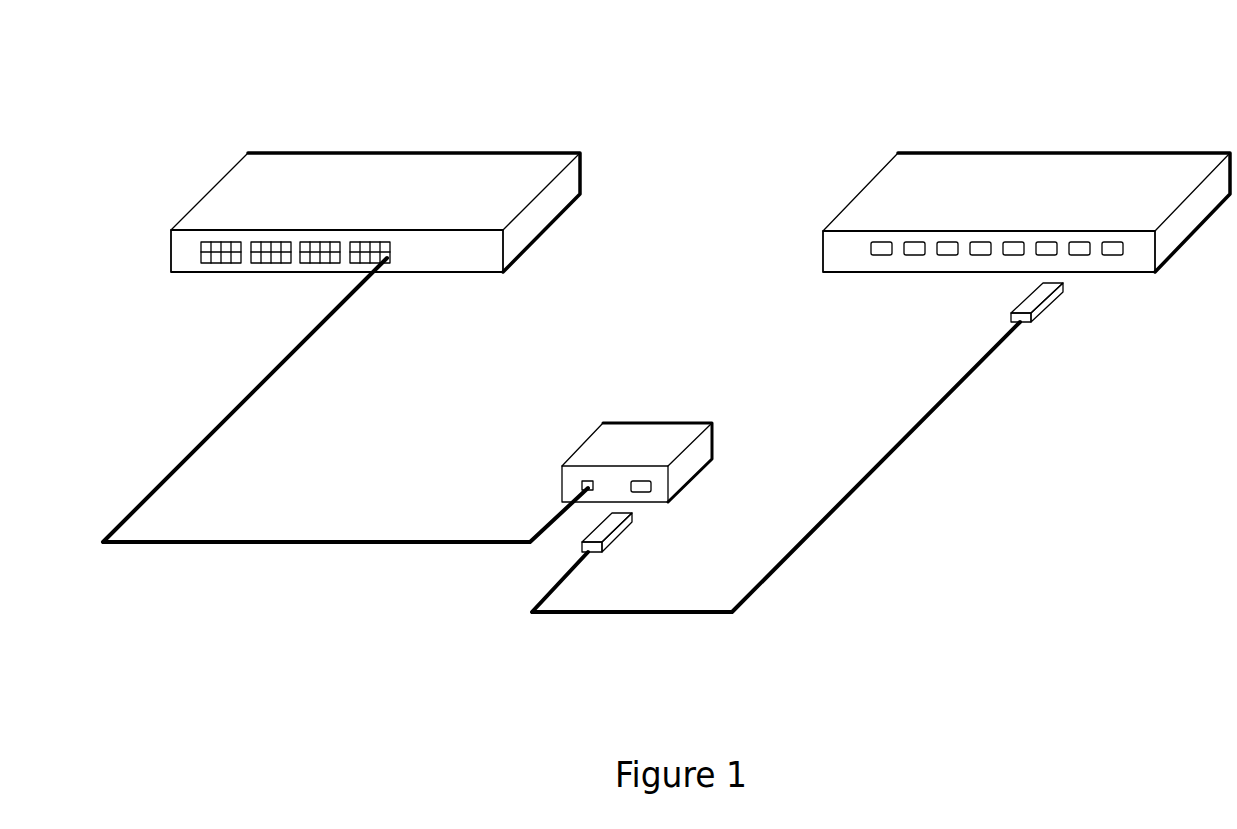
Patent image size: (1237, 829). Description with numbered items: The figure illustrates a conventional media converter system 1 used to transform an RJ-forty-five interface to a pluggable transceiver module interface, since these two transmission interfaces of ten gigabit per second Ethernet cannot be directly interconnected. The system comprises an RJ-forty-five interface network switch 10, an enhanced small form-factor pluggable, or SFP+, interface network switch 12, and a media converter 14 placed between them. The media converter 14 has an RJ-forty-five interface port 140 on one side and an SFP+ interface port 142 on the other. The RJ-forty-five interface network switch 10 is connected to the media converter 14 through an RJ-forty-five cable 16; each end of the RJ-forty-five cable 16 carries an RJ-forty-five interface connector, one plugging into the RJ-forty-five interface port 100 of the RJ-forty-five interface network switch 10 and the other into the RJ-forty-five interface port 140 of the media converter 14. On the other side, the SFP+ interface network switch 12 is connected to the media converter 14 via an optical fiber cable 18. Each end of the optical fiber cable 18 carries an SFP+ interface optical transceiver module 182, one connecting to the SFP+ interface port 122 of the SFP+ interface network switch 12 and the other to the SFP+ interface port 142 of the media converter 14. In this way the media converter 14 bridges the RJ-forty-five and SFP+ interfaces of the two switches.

The media converter system 1 is at (196, 45).
The RJ-45 interface network switch 10 is at (375, 206).
The RJ-45 interface port 100 is at (387, 258).
The SFP+ interface network switch 12 is at (1026, 199).
The SFP+ interface port 122 is at (1083, 255).
The media converter 14 is at (616, 424).
The RJ-45 interface port 140 is at (585, 480).
The SFP+ interface port 142 is at (648, 478).
The RJ-45 cable 16 is at (218, 427).
The optical fiber cable 18 is at (877, 468).
The SFP+ interface optical transceiver module 182 is at (617, 537).